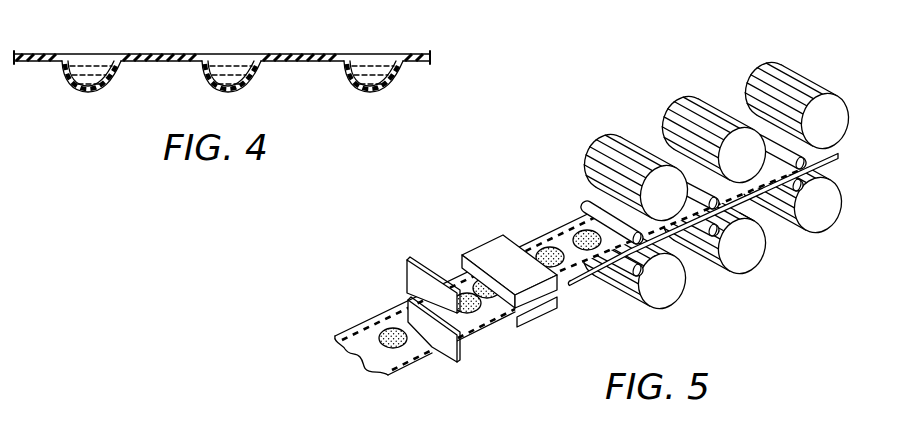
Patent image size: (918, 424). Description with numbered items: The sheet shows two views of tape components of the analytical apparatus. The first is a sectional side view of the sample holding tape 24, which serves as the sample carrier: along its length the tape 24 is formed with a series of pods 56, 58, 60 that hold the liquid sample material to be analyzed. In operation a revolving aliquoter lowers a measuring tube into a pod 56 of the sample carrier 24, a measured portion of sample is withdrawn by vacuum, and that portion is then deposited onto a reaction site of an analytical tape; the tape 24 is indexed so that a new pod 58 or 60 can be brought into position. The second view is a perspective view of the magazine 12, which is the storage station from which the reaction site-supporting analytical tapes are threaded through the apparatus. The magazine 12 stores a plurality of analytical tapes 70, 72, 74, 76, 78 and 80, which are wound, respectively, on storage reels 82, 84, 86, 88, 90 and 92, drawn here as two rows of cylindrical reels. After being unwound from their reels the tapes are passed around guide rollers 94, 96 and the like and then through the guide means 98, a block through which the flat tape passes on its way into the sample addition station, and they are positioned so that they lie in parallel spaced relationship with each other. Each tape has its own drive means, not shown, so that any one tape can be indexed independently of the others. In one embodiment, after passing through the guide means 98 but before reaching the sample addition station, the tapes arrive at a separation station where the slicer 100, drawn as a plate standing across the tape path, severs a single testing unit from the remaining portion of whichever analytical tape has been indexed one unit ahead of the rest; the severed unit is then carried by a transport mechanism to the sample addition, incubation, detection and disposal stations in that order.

In FIG. 5, the magazine 12 is at (855, 150).
In FIG. 4, the sample holding tape 24 is at (144, 62).
In FIG. 4, the pod 56 is at (67, 58).
In FIG. 4, the pod 58 is at (208, 58).
In FIG. 4, the pod 60 is at (353, 58).
In FIG. 5, the analytical tape 70 is at (590, 205).
In FIG. 5, the analytical tape 72 is at (754, 225).
In FIG. 5, the analytical tape 74 is at (757, 127).
In FIG. 5, the analytical tape 76 is at (812, 176).
In FIG. 5, the analytical tape 78 is at (717, 240).
In FIG. 5, the analytical tape 80 is at (672, 293).
In FIG. 5, the storage reel 82 is at (661, 167).
In FIG. 5, the storage reel 84 is at (720, 106).
In FIG. 5, the storage reel 86 is at (830, 104).
In FIG. 5, the storage reel 88 is at (821, 218).
In FIG. 5, the storage reel 90 is at (749, 255).
In FIG. 5, the storage reel 92 is at (638, 275).
In FIG. 5, the guide roller 94 is at (615, 292).
In FIG. 5, the guide roller 96 is at (700, 253).
In FIG. 5, the guide means 98 is at (496, 247).
In FIG. 5, the slicer 100 is at (410, 298).